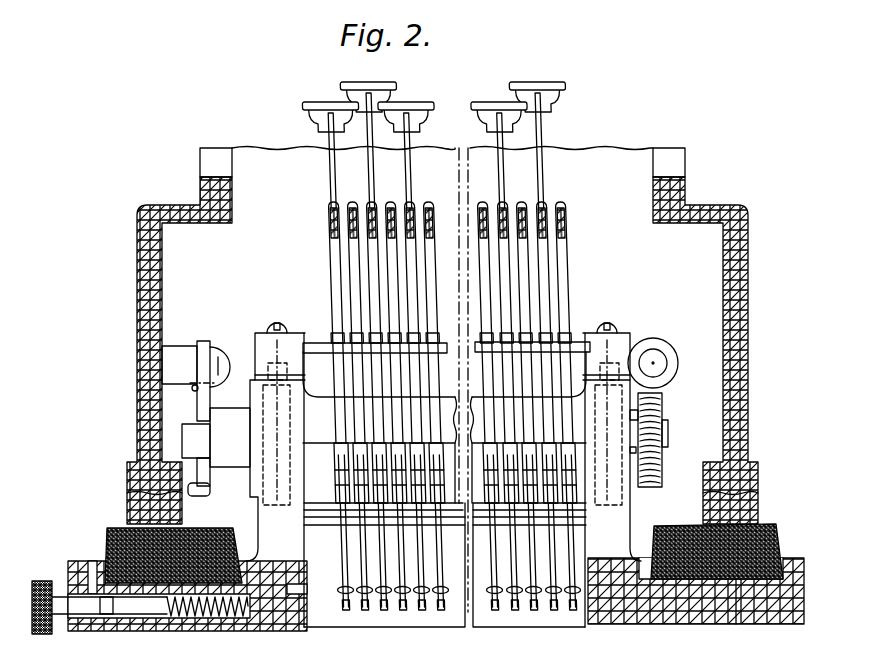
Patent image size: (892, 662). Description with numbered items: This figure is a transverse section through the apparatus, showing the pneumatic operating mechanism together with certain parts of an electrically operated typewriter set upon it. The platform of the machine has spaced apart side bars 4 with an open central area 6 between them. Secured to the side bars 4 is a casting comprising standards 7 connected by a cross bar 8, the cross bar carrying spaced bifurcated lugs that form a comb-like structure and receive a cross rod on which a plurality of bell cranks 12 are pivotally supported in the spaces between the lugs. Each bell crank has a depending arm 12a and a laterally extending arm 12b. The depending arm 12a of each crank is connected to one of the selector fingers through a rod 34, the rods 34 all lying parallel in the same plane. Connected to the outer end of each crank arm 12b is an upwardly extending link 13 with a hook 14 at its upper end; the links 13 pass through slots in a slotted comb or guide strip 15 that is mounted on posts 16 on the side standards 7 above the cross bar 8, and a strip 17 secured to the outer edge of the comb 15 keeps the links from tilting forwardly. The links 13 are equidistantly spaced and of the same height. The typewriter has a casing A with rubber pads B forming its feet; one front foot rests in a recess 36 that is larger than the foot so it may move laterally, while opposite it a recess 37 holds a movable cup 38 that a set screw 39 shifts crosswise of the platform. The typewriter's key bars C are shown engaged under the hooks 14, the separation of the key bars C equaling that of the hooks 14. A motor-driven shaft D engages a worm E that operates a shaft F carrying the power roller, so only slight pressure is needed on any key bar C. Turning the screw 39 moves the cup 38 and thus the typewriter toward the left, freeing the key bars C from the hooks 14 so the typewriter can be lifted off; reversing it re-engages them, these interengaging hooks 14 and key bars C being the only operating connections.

The side bars 4 is at (285, 620).
The open central area 6 is at (468, 613).
The standards 7 is at (265, 522).
The cross bar 8 is at (444, 427).
The bell cranks 12 is at (570, 472).
The depending arm 12a is at (574, 607).
The laterally extending arm 12b is at (575, 490).
The links 13 is at (556, 300).
The hooks 14 is at (507, 207).
The slotted comb or guide strip 15 is at (578, 340).
The posts 16 is at (262, 342).
The strip 17 is at (323, 346).
The rods 34 is at (403, 603).
The recess 36 is at (735, 614).
The recess 37 is at (78, 578).
The movable cup 38 is at (140, 595).
The set screw 39 is at (173, 612).
The casing A is at (137, 399).
The rubber pads B is at (117, 530).
The key bars C is at (348, 230).
The motor-driven shaft D is at (660, 363).
The worm E is at (662, 410).
The shaft F is at (668, 436).